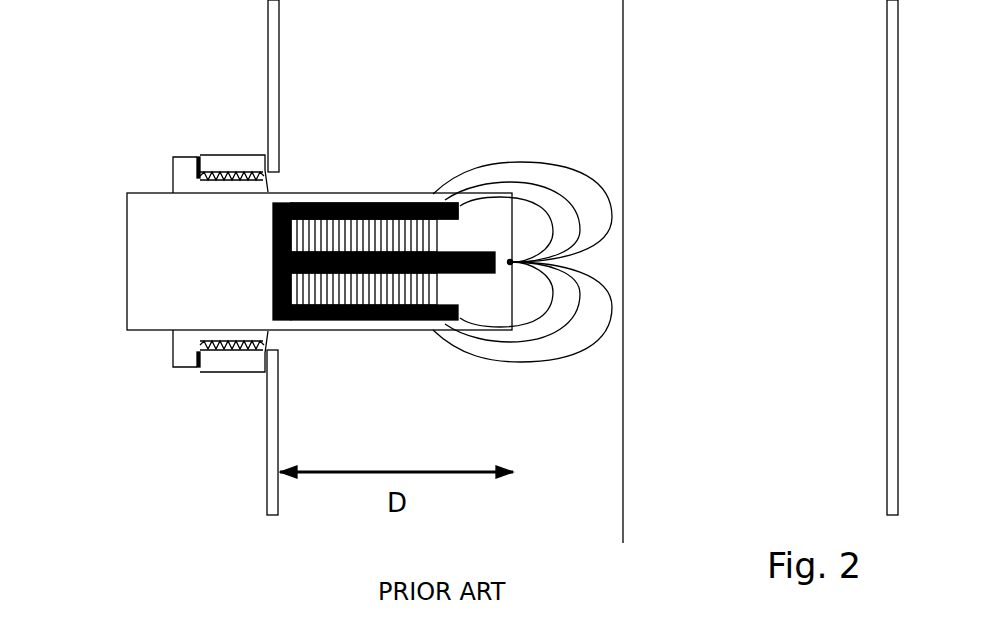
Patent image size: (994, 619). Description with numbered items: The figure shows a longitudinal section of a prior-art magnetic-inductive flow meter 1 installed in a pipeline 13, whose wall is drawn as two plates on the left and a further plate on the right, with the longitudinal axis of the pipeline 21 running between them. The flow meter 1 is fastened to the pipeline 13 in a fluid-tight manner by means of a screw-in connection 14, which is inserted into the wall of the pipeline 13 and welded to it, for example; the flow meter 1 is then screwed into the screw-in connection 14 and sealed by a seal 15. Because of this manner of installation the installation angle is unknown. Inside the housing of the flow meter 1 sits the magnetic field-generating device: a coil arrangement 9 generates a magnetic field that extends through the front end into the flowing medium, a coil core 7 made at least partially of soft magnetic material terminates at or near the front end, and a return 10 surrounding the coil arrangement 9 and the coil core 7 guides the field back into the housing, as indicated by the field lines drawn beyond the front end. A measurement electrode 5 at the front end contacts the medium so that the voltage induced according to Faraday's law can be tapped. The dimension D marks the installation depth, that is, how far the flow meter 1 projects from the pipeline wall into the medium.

The flow meter 1 is at (80, 193).
The second galvanic measurement electrode 5 is at (514, 264).
The coil core 7 is at (398, 283).
The coil arrangement 9 is at (352, 200).
The return 10 is at (390, 195).
The pipeline 13 is at (275, 125).
The screw-in connection 14 is at (230, 163).
The seal 15 is at (198, 155).
The longitudinal axis of the pipeline 21 is at (623, 73).